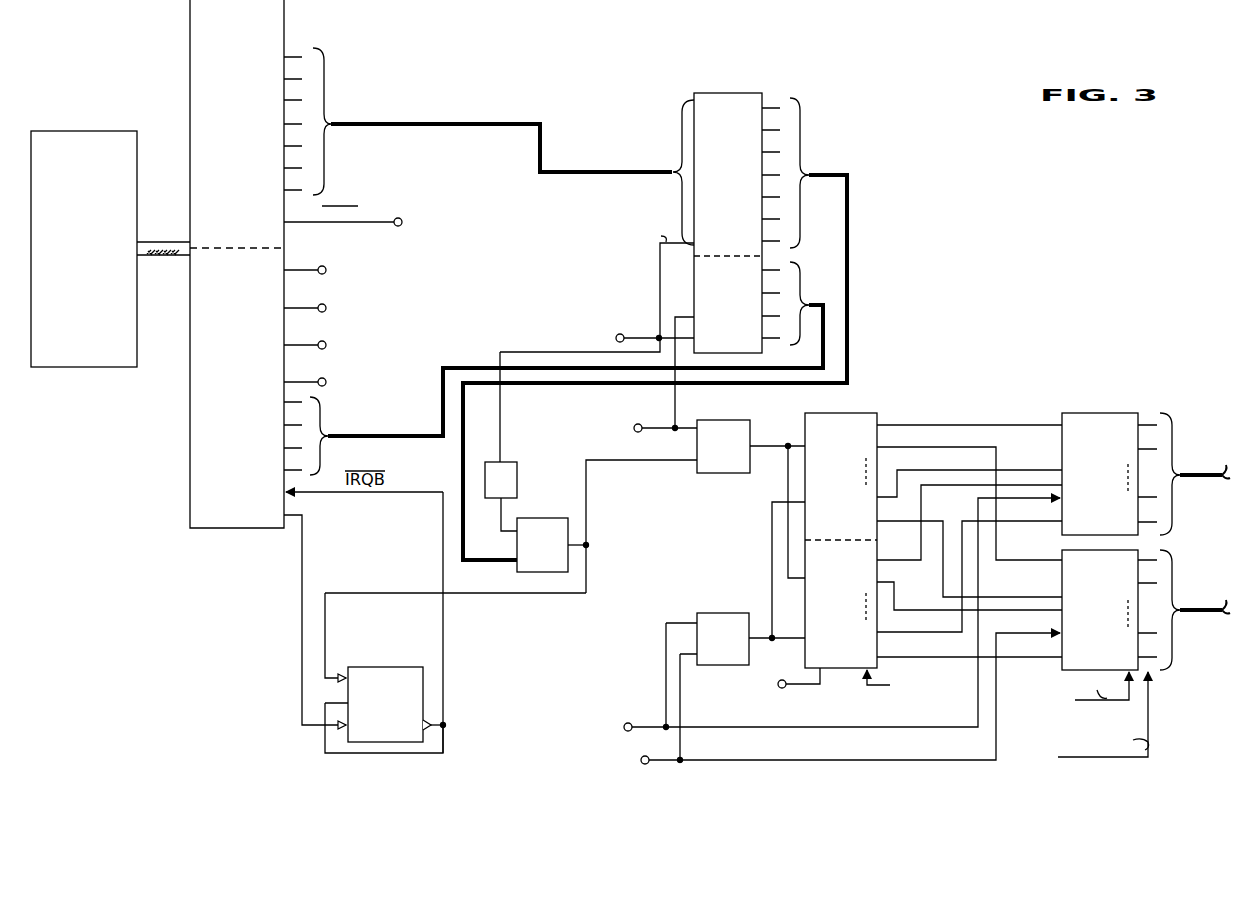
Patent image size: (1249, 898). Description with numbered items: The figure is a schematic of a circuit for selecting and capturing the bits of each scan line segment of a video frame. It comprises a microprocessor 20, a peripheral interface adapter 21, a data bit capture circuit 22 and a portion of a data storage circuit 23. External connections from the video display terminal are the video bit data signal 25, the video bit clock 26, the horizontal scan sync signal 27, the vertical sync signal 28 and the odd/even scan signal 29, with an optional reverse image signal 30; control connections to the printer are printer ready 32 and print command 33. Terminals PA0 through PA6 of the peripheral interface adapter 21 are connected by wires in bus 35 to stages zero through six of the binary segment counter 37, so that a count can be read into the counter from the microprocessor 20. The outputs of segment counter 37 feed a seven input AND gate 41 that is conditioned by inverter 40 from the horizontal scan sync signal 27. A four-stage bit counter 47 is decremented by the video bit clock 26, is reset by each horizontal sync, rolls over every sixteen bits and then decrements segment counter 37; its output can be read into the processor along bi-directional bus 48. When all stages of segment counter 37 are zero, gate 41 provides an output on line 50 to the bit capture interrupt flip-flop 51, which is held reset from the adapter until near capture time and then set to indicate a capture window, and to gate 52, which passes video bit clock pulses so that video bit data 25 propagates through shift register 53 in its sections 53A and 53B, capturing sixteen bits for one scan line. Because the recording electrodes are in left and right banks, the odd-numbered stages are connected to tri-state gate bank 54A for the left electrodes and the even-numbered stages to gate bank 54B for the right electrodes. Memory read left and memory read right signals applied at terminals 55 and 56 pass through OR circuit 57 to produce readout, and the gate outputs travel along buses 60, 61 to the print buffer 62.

The microprocessor 20 is at (96, 131).
The peripheral interface adapter 21 is at (190, 38).
The data bit capture circuit 22 is at (853, 246).
The data storage circuit 23 is at (977, 409).
The video bit data signal 25 is at (782, 689).
The video bit clock 26 is at (641, 424).
The horizontal scan synchronization signal 27 is at (621, 336).
The vertical synchronization signal 28 is at (395, 226).
The odd/even scan signal 29 is at (321, 265).
The reverse image signal 30 is at (320, 304).
The printer ready signal 32 is at (320, 341).
The print command signal 33 is at (320, 378).
The bus 35 is at (481, 122).
The binary segment counter 37 is at (730, 93).
The inverter 40 is at (519, 474).
The seven input AND gate 41 is at (540, 518).
The bit counter 47 is at (692, 276).
The bi-directional bus 48 is at (400, 436).
The line 50 is at (586, 500).
The bit capture interrupt flip-flop 51 is at (425, 683).
The gate 52 is at (726, 420).
The shift register 53 is at (885, 519).
The shift register section A 53A is at (862, 412).
The shift register section B 53B is at (845, 669).
The tri-state gate bank 54A is at (1100, 413).
The tri-state gate bank 54B is at (1062, 553).
The memory read left terminal 55 is at (631, 723).
The memory read right terminal 56 is at (648, 756).
The OR circuit 57 is at (718, 613).
The bus 60 is at (1219, 472).
The bus 61 is at (1208, 616).
The print buffer 62 is at (1220, 546).